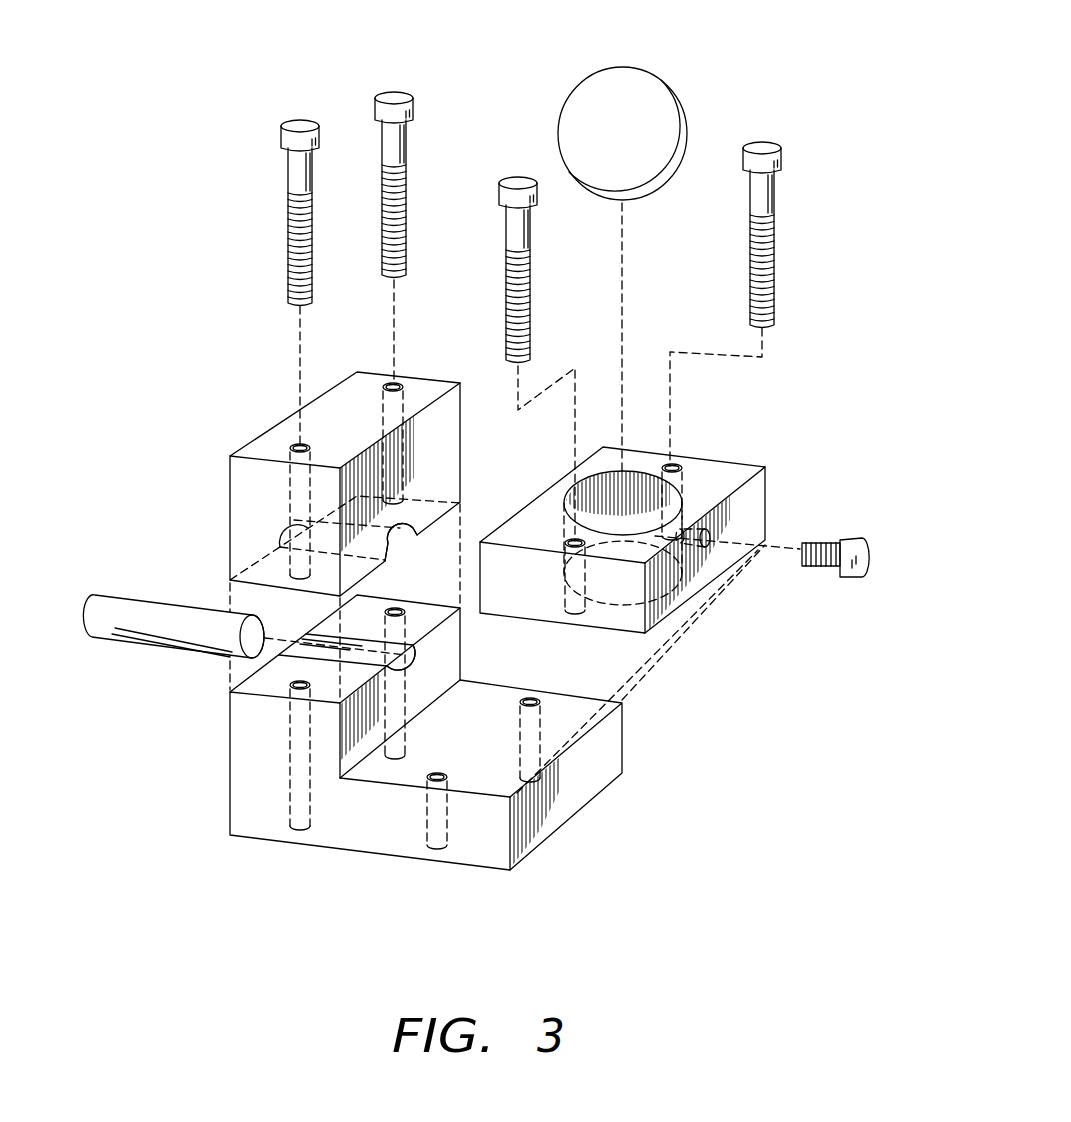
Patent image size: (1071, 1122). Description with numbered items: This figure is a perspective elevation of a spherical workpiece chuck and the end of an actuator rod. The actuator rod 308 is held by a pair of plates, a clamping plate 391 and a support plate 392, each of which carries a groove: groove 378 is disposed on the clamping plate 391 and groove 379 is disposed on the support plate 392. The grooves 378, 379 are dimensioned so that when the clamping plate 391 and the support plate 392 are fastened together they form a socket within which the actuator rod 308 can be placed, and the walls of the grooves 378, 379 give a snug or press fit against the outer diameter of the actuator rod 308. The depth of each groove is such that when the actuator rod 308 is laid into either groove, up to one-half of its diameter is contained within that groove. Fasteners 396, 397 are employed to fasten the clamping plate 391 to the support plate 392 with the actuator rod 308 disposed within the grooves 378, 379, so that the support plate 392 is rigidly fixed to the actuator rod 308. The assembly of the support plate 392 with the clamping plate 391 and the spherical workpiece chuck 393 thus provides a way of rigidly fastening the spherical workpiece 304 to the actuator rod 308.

The spherical workpiece 304 is at (664, 88).
The actuator rod 308 is at (140, 645).
The groove 378 is at (392, 551).
The groove 379 is at (412, 671).
The clamping plate 391 is at (205, 498).
The support plate 392 is at (293, 888).
The spherical workpiece chuck 393 is at (810, 452).
The fastener 396 is at (283, 138).
The fastener 397 is at (378, 108).